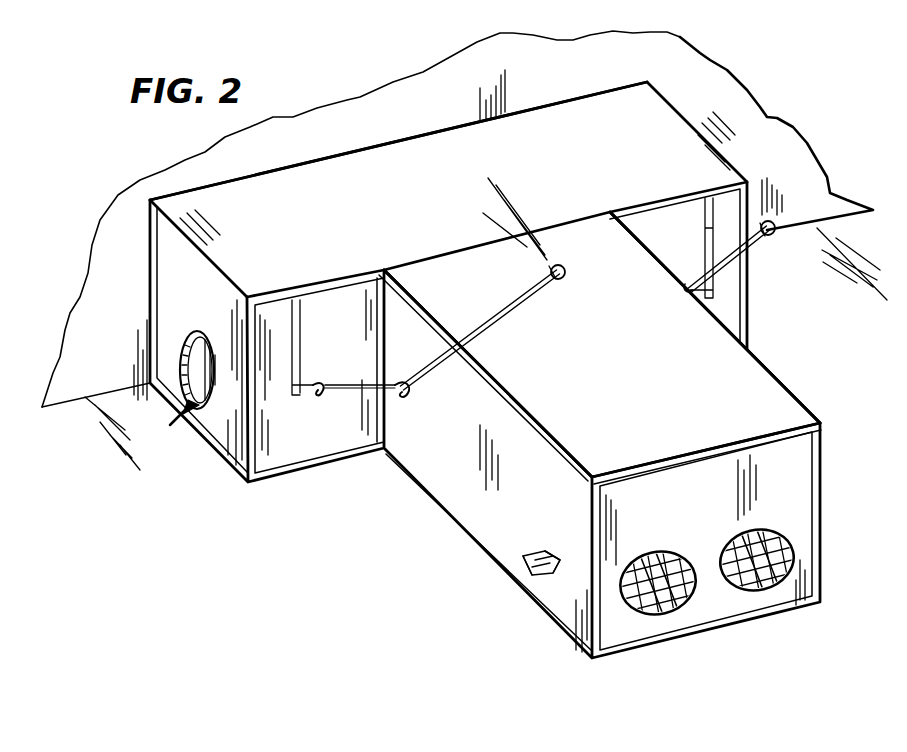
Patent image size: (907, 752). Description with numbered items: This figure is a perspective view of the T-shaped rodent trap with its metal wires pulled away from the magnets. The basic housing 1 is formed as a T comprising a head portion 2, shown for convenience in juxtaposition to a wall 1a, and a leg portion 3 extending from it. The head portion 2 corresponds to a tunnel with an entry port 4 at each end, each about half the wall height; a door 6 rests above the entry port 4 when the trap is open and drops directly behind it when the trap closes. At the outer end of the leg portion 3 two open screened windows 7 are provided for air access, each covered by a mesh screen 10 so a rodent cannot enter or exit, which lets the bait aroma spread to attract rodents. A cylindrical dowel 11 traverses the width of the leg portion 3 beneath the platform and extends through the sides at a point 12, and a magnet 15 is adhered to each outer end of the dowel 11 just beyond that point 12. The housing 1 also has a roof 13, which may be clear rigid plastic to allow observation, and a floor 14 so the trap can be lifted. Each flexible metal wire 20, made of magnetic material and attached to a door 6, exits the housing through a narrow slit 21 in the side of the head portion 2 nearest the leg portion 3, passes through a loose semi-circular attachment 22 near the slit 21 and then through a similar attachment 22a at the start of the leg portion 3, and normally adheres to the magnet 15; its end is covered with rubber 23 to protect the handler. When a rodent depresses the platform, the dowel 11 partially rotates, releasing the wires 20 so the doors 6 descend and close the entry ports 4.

The housing 1 is at (733, 128).
The wall 1a is at (574, 77).
The head portion 2 is at (435, 146).
The leg portion 3 is at (740, 378).
The entry port 4 is at (172, 424).
The door 6 is at (203, 410).
The open screened window 7 is at (750, 590).
The mesh screen 10 is at (707, 582).
The dowel 11 is at (560, 572).
The point 12 is at (554, 555).
The roof 13 is at (606, 348).
The floor 14 is at (445, 515).
The magnet 15 is at (521, 560).
The flexible metal wire 20 is at (478, 327).
The narrow slit 21 is at (297, 340).
The semi-circular attachment 22 is at (320, 397).
The semi-circular attachment 22a is at (401, 400).
The rubber 23 is at (559, 265).